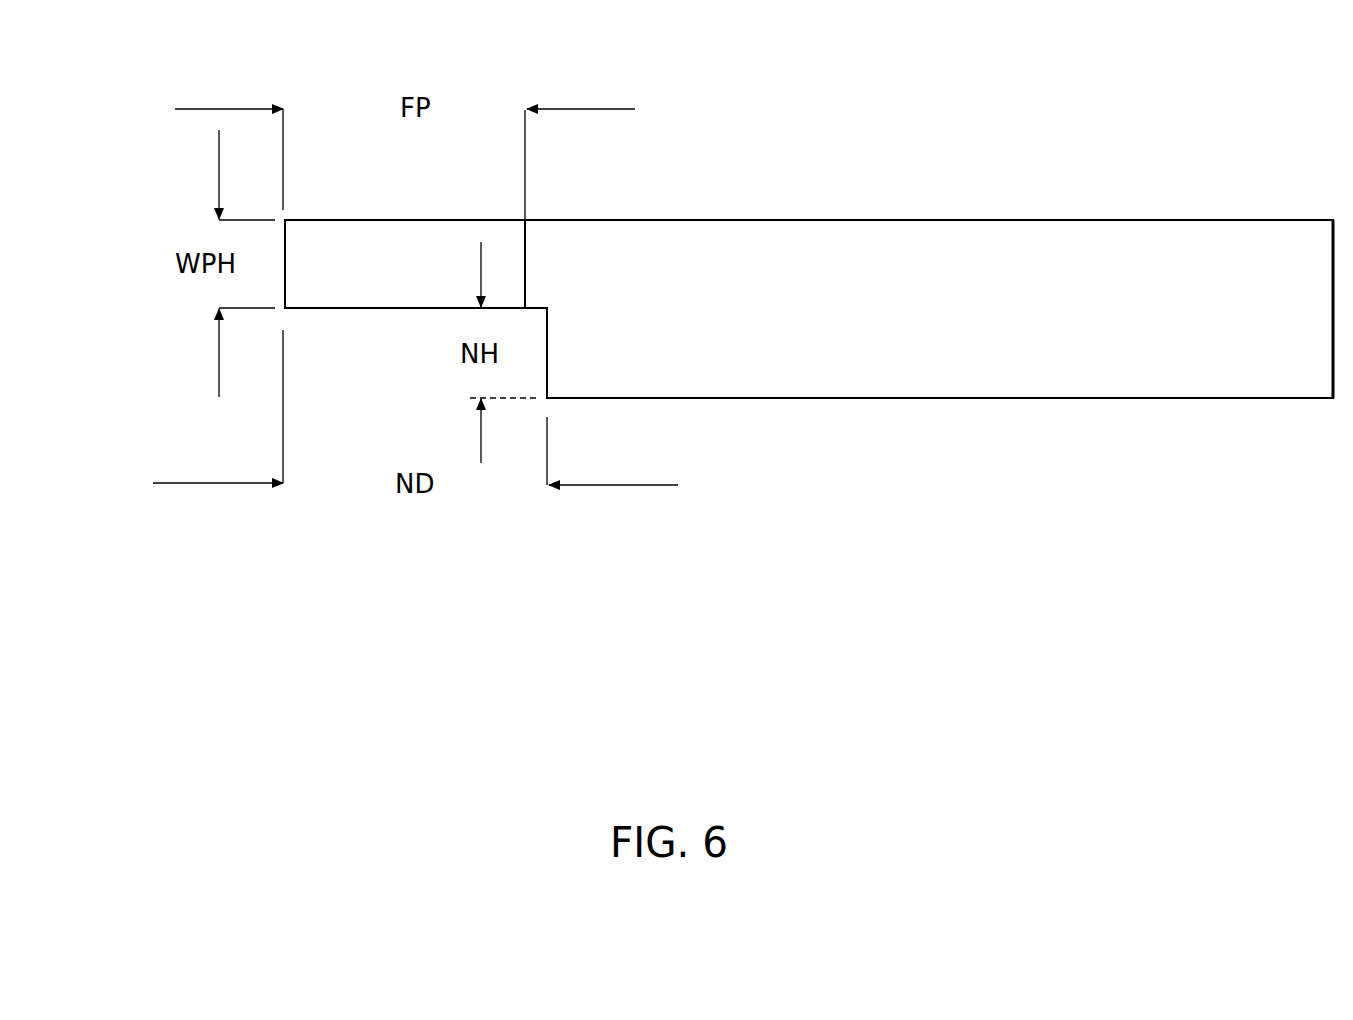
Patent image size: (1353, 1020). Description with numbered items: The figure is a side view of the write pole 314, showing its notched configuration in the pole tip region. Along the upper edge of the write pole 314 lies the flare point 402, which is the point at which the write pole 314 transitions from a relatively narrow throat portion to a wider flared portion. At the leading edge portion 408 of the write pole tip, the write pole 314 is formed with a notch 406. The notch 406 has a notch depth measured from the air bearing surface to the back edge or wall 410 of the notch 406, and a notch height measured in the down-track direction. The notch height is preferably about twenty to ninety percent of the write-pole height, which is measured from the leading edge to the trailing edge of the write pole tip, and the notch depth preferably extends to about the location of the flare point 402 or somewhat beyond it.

The write pole 314 is at (731, 210).
The flare point 402 is at (526, 252).
The notch 406 is at (543, 317).
The leading edge portion 408 is at (287, 309).
The back edge or wall of the notch 410 is at (543, 380).